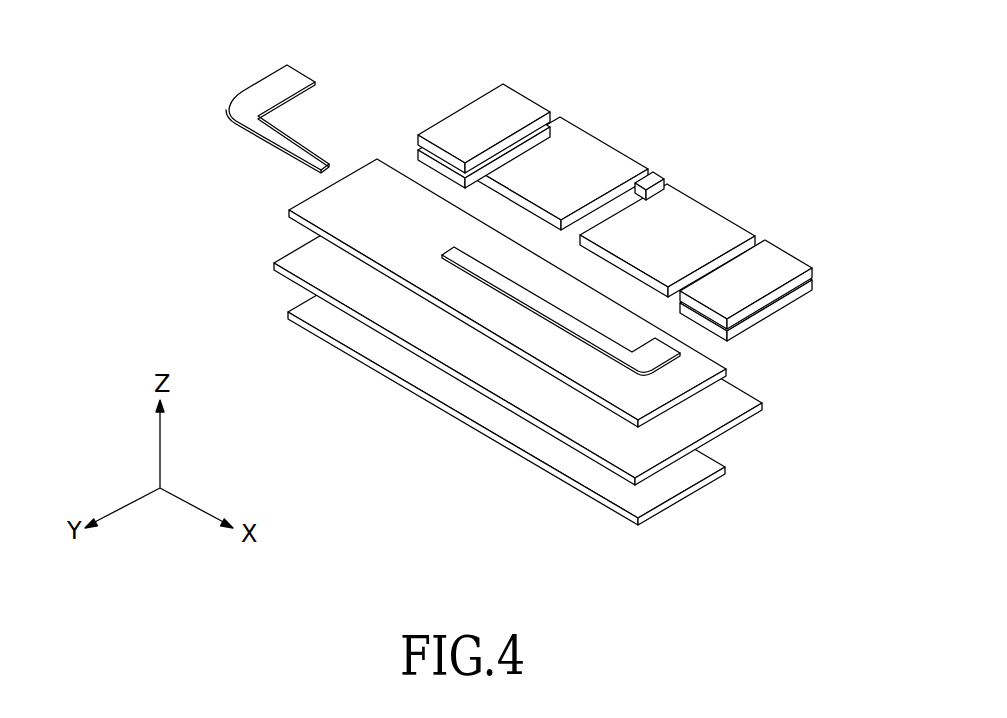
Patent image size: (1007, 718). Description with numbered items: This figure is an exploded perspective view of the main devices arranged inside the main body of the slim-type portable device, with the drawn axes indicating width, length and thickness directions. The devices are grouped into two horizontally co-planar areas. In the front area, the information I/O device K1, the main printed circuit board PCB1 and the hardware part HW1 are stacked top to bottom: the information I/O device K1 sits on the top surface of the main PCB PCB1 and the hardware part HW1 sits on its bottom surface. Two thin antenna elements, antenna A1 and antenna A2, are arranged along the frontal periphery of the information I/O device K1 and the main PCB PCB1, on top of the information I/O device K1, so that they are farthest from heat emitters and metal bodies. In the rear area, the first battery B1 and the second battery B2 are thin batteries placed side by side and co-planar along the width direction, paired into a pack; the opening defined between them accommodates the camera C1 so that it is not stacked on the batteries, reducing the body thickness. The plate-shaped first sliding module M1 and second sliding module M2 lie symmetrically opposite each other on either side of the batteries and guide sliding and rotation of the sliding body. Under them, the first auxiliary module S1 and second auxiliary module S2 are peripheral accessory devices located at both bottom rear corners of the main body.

The antenna A1 is at (257, 92).
The antenna A2 is at (685, 350).
The information I/O device K1 is at (317, 212).
The main printed circuit board PCB1 is at (312, 270).
The hardware part HW1 is at (357, 342).
The first auxiliary module S1 is at (418, 152).
The first sliding module M1 is at (517, 103).
The first battery B1 is at (600, 150).
The camera C1 is at (656, 172).
The second battery B2 is at (698, 212).
The second sliding module M2 is at (782, 260).
The second auxiliary module S2 is at (812, 287).